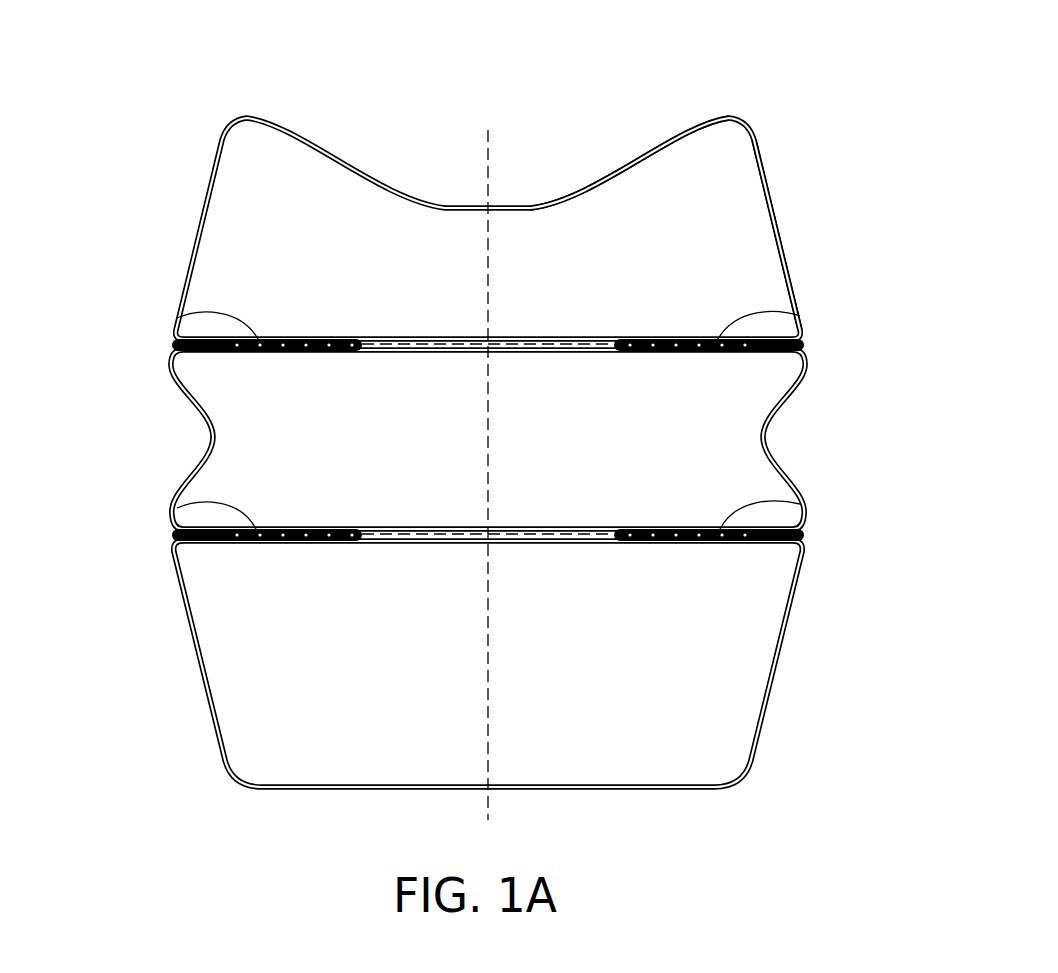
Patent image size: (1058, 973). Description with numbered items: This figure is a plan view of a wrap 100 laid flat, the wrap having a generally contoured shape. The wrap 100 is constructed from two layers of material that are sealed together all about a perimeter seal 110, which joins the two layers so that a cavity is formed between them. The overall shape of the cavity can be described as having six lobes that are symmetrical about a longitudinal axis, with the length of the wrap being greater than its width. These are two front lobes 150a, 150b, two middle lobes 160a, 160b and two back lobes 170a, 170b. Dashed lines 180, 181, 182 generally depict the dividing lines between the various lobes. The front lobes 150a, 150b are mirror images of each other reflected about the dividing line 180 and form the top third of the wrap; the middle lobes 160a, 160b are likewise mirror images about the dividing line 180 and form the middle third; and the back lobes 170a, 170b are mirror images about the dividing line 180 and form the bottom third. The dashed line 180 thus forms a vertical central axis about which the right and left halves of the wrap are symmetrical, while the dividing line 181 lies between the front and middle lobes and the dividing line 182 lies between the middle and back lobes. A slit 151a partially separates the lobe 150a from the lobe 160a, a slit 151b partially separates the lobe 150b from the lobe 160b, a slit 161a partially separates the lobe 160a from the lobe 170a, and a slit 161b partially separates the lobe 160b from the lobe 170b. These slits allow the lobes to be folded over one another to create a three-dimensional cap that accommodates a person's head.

The wrap 100 is at (817, 206).
The perimeter seal 110 is at (646, 150).
The front lobe 150a is at (343, 263).
The front lobe 150b is at (698, 263).
The slit 151a is at (177, 318).
The slit 151b is at (800, 316).
The middle lobe 160a is at (343, 453).
The middle lobe 160b is at (698, 453).
The slit 161a is at (177, 508).
The slit 161b is at (800, 504).
The back lobe 170a is at (343, 673).
The back lobe 170b is at (698, 673).
The dividing line 180 is at (488, 260).
The dividing line 181 is at (400, 344).
The dividing line 182 is at (580, 534).